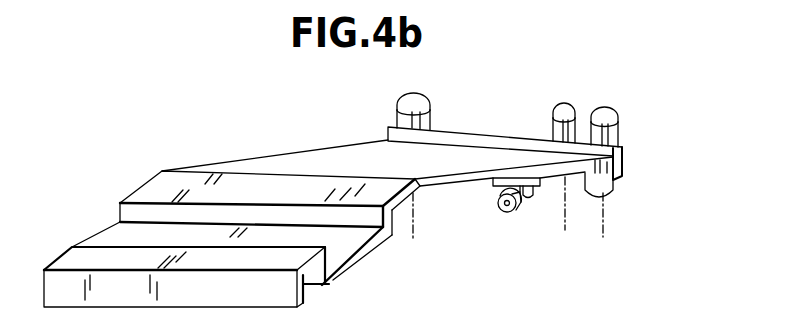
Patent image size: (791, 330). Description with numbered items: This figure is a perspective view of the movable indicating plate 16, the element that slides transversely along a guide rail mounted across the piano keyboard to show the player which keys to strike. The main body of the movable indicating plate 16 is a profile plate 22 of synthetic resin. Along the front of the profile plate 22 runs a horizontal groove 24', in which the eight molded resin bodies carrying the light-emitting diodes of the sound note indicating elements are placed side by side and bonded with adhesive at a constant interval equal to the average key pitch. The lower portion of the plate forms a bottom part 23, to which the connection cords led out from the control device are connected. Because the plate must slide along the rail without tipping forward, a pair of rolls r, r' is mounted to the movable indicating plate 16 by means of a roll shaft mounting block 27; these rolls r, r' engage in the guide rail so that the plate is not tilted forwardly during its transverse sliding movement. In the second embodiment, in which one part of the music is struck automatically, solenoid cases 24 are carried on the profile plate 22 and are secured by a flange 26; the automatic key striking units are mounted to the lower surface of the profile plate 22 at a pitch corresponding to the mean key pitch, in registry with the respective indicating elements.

The movable indicating plate 16 is at (233, 146).
The profile plate 22 is at (328, 148).
The bottom part 23 is at (347, 238).
The solenoid case 24 is at (518, 146).
The horizontal groove 24' is at (186, 254).
The flange 26 is at (623, 155).
The roll shaft mounting block 27 is at (531, 198).
The roll r is at (505, 215).
The roll r' is at (540, 199).